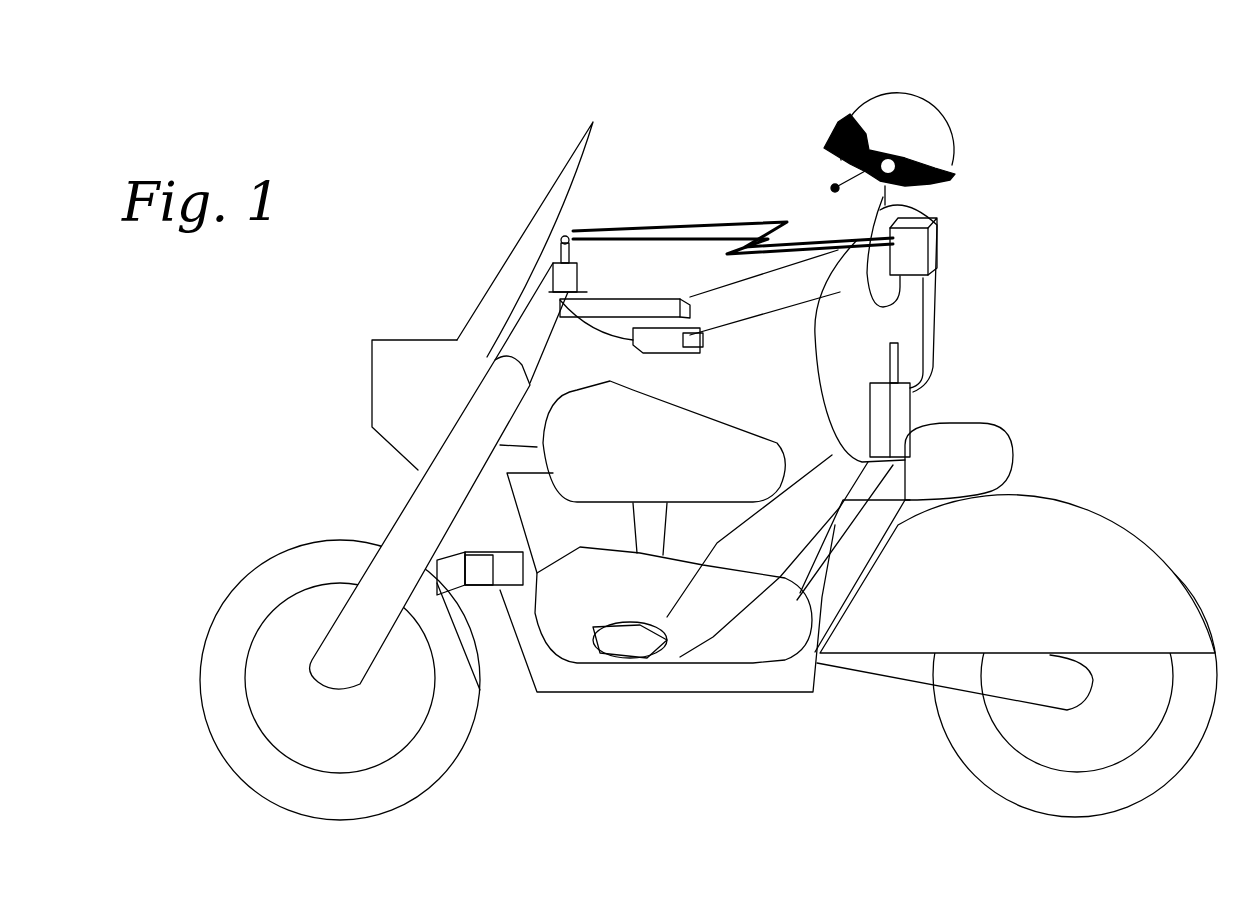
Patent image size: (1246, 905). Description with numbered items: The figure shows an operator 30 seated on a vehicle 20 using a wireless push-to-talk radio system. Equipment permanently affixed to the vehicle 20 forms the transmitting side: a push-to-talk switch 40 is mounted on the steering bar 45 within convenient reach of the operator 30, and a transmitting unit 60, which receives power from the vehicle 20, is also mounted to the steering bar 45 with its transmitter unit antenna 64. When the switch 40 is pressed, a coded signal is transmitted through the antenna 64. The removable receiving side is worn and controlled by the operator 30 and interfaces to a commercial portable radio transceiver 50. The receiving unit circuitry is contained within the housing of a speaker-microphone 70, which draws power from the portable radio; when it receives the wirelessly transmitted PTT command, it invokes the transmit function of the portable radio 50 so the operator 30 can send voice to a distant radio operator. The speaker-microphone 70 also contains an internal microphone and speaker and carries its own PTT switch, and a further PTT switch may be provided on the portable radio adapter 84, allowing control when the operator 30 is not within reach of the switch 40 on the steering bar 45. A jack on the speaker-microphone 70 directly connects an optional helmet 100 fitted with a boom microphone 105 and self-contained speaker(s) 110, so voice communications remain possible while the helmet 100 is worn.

The vehicle 20 is at (367, 371).
The operator 30 is at (946, 314).
The push-to-talk (PTT) switch 40 is at (697, 330).
The steering bar 45 is at (633, 297).
The portable radio transceiver 50 is at (910, 440).
The transmitting unit 60 is at (549, 290).
The transmitter unit antenna 64 is at (553, 263).
The speaker-microphone 70 is at (935, 247).
The portable radio adapter 84 is at (912, 400).
The helmet 100 is at (945, 108).
The boom microphone 105 is at (831, 187).
The speaker(s) 110 is at (950, 168).